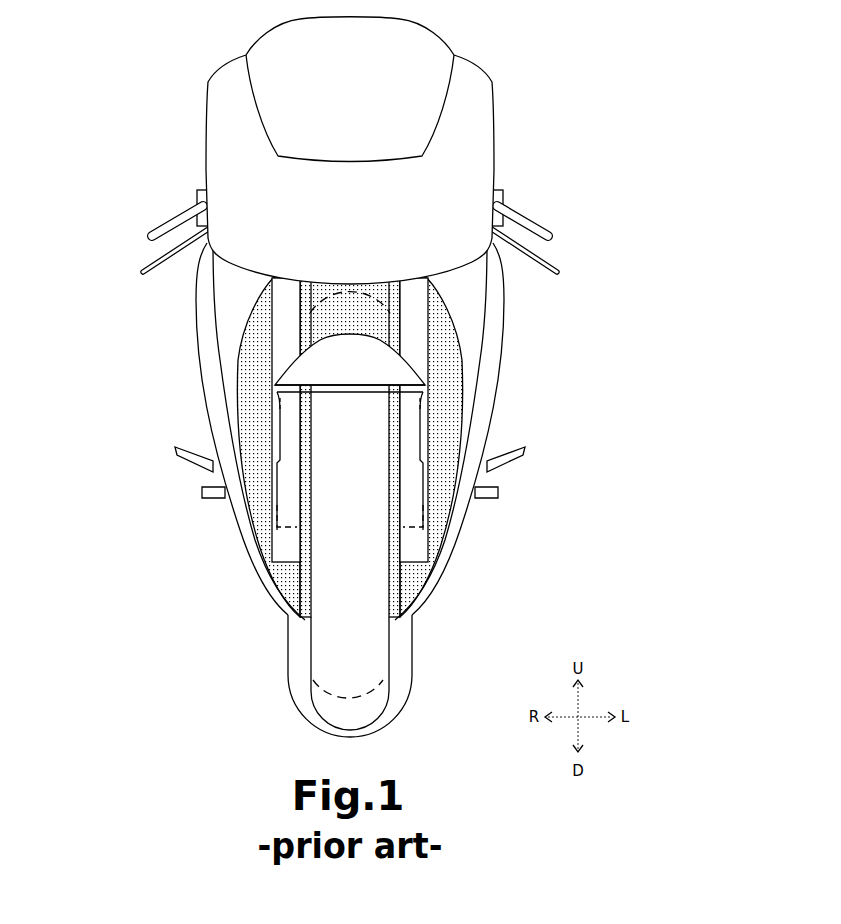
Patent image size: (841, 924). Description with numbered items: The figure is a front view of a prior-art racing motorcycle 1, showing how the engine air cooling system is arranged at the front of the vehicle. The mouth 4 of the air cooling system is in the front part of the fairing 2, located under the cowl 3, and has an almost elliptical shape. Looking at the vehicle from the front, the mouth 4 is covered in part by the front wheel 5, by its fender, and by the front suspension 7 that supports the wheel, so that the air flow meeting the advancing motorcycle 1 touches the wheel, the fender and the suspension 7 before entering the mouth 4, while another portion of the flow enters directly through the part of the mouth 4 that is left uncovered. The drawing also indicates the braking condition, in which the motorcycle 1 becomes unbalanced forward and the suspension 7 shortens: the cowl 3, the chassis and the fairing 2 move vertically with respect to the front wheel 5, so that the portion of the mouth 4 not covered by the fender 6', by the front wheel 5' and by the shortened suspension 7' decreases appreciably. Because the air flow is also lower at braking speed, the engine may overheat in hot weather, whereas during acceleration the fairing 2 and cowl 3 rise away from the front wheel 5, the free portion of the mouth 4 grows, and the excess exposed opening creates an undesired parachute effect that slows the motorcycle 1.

The motorcycle 1 is at (371, 398).
The fairing 2 is at (490, 375).
The cowl 3 is at (255, 222).
The mouth 4 is at (248, 423).
The front wheel 5 is at (251, 703).
The front wheel 5' is at (420, 671).
The fender 6' is at (469, 317).
The front suspension 7 is at (398, 379).
The front suspension 7' is at (250, 583).